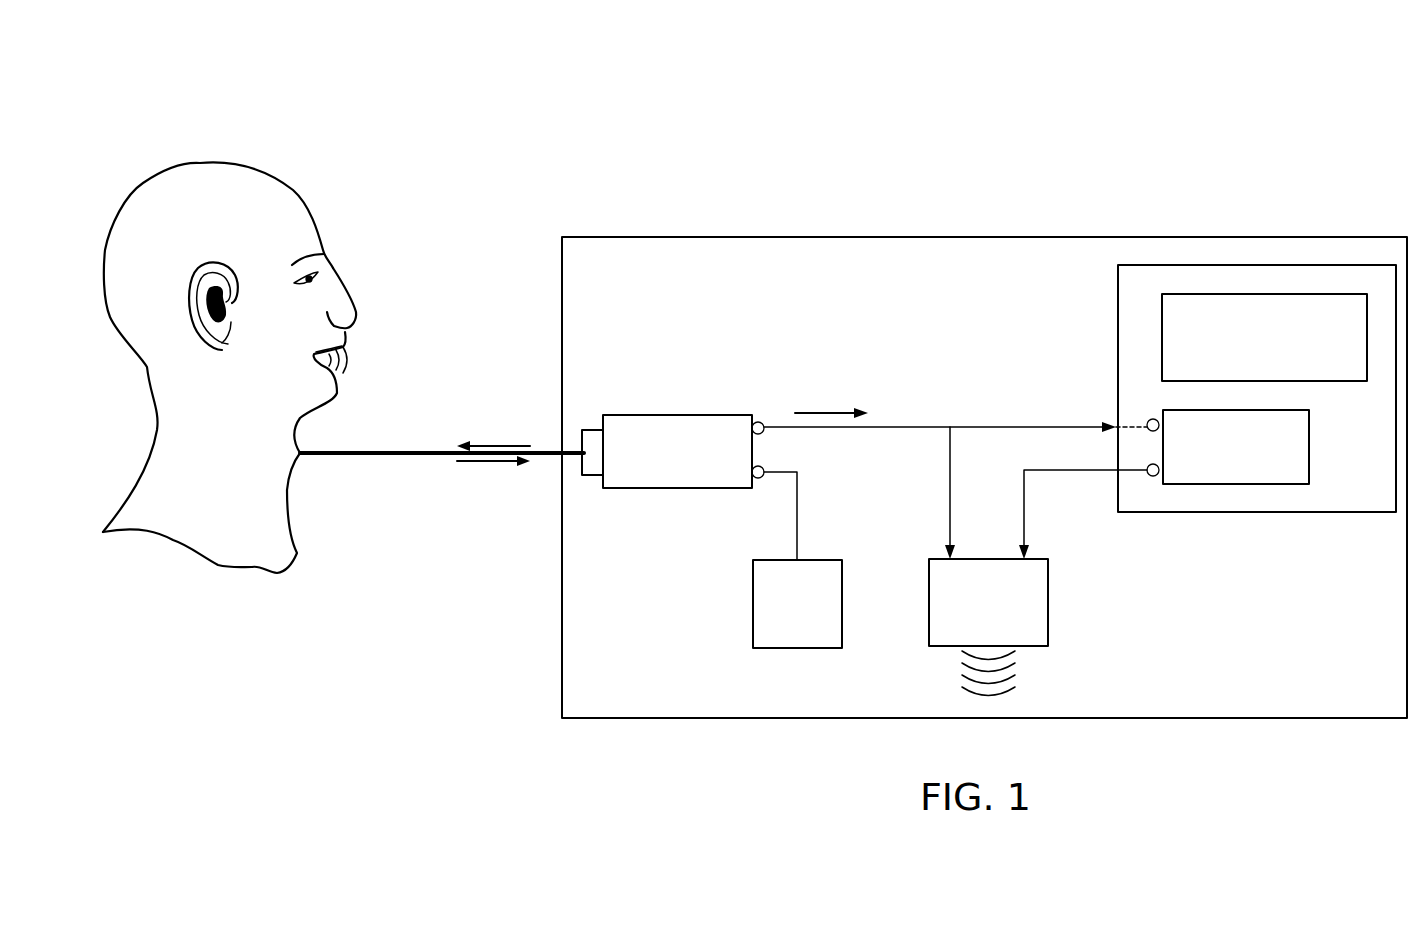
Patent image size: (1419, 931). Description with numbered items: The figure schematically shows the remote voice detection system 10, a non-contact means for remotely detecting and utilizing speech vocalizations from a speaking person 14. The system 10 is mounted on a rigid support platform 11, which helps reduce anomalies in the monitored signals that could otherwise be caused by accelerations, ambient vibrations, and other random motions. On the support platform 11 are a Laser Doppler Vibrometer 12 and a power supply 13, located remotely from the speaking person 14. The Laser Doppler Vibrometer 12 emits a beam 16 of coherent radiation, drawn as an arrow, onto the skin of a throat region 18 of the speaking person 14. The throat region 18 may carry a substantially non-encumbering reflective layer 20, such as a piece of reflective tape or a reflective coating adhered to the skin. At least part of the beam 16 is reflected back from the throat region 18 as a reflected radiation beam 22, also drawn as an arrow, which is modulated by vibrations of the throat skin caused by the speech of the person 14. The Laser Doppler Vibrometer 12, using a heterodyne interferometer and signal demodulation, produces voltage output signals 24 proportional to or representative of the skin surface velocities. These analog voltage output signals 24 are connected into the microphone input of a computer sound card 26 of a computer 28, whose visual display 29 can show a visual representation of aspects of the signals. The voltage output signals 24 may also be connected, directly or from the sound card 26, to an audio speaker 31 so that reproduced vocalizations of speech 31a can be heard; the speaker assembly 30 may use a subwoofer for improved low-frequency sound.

The remote voice detection system 10 is at (840, 202).
The rigid support platform 11 is at (1029, 237).
The Laser Doppler Vibrometer 12 is at (673, 451).
The power supply 13 is at (797, 560).
The speaking person 14 is at (290, 188).
The beam 16 is at (497, 446).
The throat region 18 is at (314, 420).
The reflective layer 20 is at (304, 457).
The reflected radiation beam 22 is at (490, 463).
The voltage output signals 24 is at (830, 413).
The computer sound card 26 is at (1164, 484).
The computer 28 is at (1264, 252).
The visual display 29 is at (1264, 337).
The alarm unit 30 is at (1048, 561).
The audio speaker 31 is at (988, 536).
The reproduced vocalizations of speech 31a is at (1044, 667).